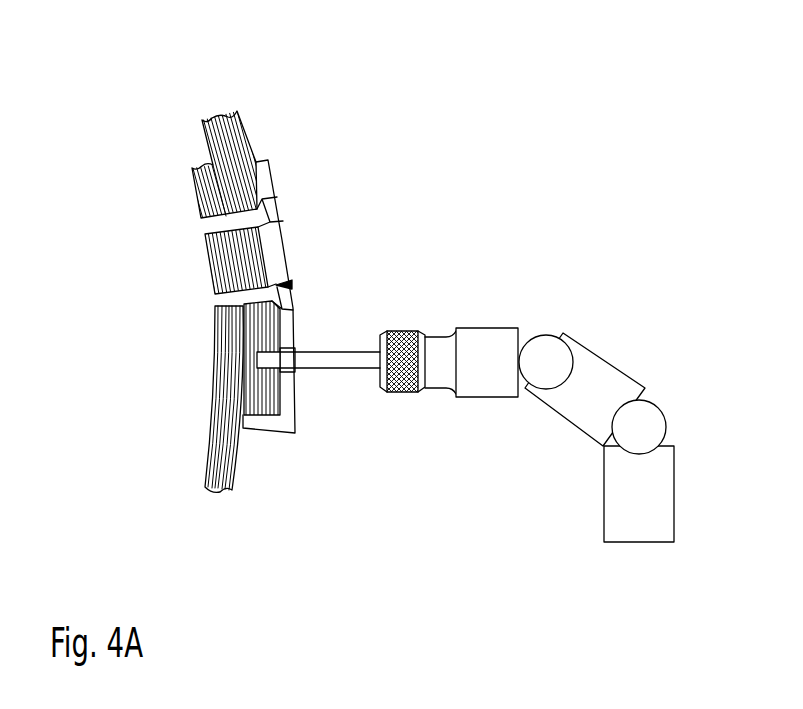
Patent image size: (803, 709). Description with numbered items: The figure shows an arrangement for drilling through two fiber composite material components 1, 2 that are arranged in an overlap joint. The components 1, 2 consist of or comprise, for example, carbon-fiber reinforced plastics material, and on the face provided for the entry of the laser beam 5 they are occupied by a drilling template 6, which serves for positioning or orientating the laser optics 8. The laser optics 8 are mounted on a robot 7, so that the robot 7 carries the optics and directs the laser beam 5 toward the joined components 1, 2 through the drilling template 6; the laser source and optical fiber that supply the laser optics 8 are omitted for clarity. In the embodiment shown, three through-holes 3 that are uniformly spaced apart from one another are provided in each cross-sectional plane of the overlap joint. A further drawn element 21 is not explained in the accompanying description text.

The fiber composite material component 1 is at (230, 119).
The fiber composite material component 2 is at (222, 468).
The through-hole 3 is at (203, 227).
The laser beam 5 is at (343, 357).
The drilling template 6 is at (278, 250).
The robot 7 is at (483, 340).
The laser optics 8 is at (403, 330).
The wedge 21 is at (293, 284).